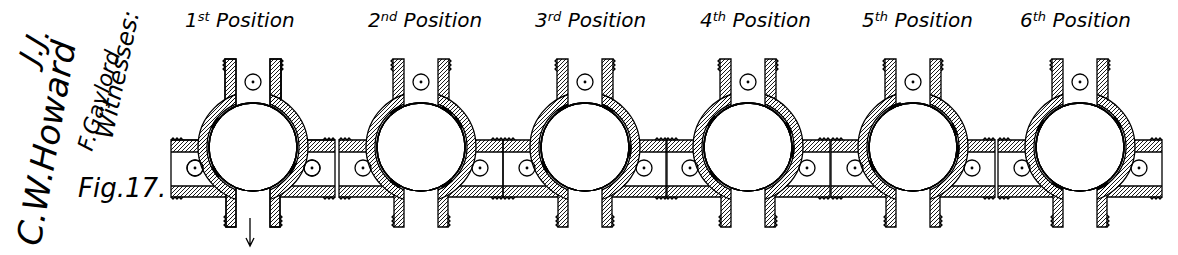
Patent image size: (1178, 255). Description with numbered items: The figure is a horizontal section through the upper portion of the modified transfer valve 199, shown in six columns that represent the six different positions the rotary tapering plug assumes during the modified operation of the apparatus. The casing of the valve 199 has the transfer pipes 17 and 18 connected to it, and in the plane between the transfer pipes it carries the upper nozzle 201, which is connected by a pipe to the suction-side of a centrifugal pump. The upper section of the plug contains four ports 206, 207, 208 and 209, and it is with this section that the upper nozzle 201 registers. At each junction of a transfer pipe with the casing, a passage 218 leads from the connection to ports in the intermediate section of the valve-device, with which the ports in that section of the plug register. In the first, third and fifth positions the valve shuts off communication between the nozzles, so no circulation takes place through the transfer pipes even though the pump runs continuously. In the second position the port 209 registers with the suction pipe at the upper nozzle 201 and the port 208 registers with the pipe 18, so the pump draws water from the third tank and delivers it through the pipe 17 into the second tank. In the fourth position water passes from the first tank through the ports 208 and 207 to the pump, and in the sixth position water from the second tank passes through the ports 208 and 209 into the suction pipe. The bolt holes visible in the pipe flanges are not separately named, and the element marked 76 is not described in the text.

The pipe 17 is at (282, 84).
The pipe 18 is at (176, 140).
The right pipe section 76 is at (318, 140).
The valve 199 is at (233, 75).
The upper nozzle 201 is at (257, 222).
The port 206 is at (291, 167).
The port 207 is at (248, 103).
The port 208 is at (216, 124).
The port 209 is at (217, 171).
The passage 218 is at (195, 176).